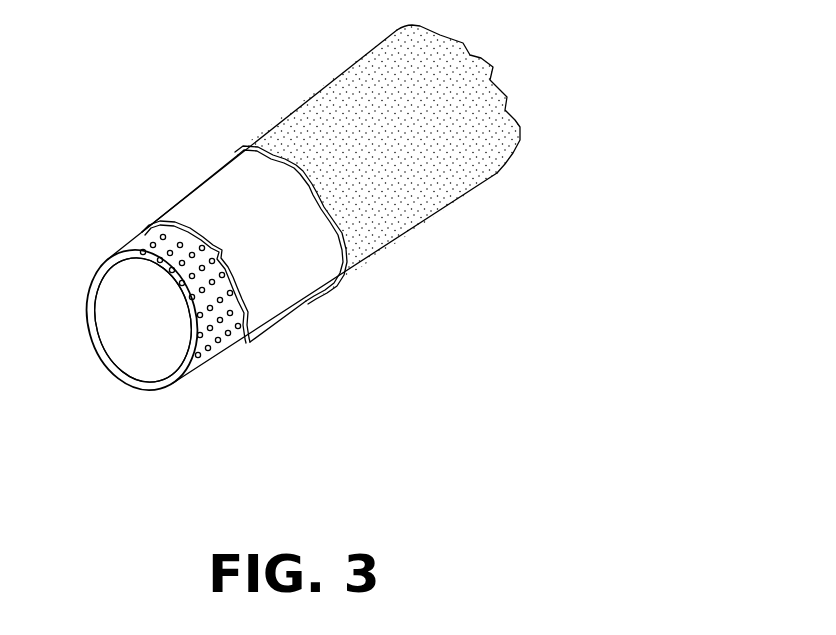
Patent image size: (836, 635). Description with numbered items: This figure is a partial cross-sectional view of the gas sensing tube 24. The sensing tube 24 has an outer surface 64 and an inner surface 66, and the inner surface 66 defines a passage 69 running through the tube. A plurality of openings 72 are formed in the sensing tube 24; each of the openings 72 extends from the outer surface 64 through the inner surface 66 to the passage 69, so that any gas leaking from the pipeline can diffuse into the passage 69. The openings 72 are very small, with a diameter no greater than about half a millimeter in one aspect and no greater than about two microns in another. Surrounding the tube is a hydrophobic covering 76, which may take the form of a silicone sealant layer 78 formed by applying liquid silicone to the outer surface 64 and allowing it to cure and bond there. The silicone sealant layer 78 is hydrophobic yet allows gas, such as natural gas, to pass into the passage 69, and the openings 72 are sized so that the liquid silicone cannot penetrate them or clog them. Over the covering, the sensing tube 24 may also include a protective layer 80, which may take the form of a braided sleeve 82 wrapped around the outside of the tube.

The sensing tube 24 is at (395, 295).
The outer surface 64 is at (138, 245).
The inner surface 66 is at (123, 334).
The passage 69 is at (140, 302).
The openings 72 is at (237, 339).
The hydrophobic covering 76 is at (278, 285).
The silicone sealant layer 78 is at (222, 212).
The protective layer 80 is at (435, 195).
The braided sleeve 82 is at (343, 110).